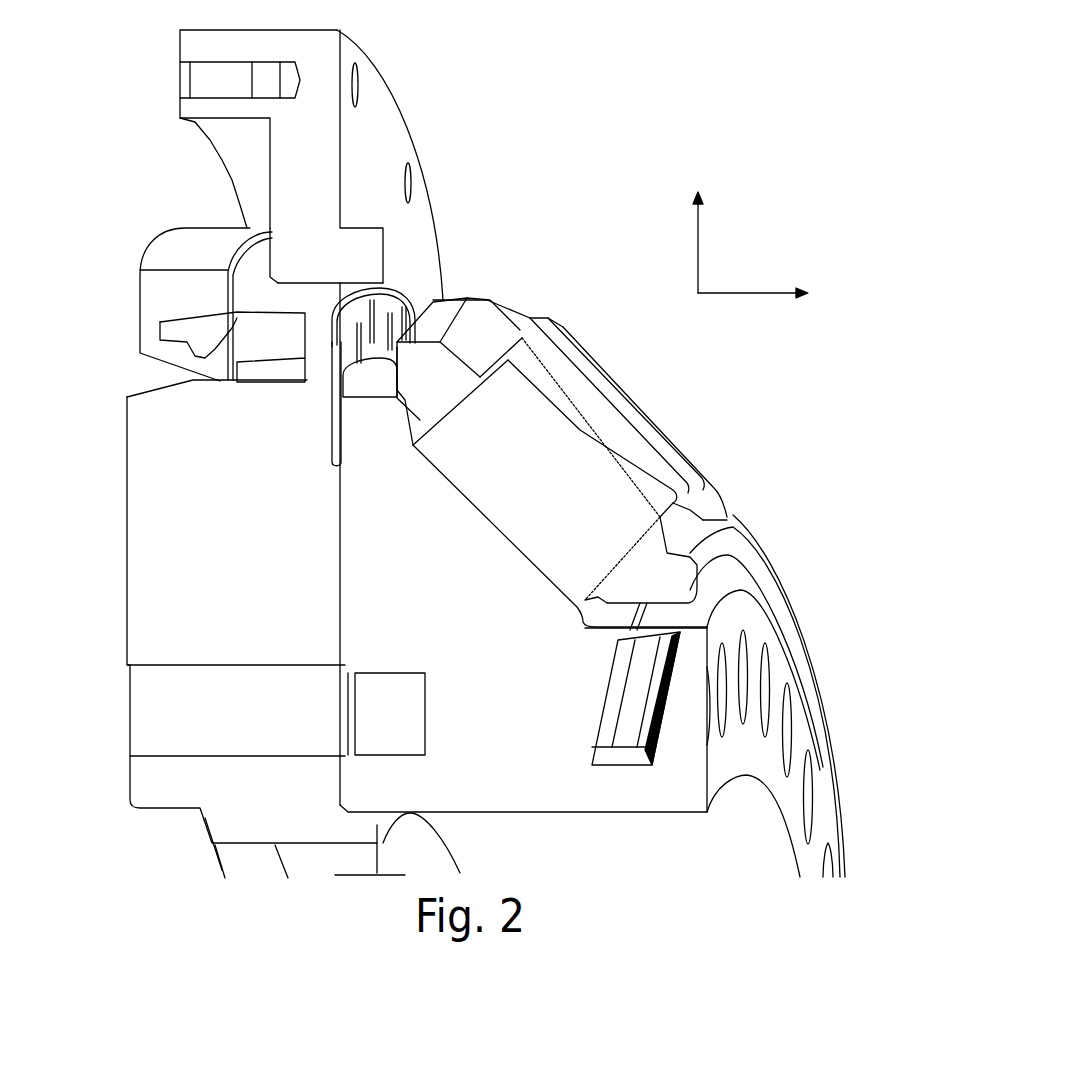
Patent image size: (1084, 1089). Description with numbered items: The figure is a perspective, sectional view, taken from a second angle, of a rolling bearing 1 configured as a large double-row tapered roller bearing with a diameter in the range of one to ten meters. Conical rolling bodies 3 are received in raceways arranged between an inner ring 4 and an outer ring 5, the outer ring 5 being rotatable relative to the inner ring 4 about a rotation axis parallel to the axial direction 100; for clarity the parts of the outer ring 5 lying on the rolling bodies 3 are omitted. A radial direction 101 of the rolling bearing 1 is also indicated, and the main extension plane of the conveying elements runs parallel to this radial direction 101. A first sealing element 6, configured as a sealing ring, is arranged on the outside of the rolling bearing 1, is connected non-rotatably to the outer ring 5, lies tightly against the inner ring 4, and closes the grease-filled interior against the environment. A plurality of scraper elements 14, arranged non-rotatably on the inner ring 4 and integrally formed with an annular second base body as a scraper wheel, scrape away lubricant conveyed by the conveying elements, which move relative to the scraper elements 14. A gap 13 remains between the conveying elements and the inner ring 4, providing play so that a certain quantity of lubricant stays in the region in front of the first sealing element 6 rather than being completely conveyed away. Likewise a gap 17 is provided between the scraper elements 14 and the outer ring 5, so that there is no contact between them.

The rolling bearing 1 is at (552, 98).
The conical rolling bodies 3 is at (577, 475).
The inner ring 4 is at (172, 587).
The outer ring 5 is at (230, 159).
The first sealing element 6 is at (163, 297).
The gap 13 is at (246, 374).
The scraper elements 14 is at (318, 353).
The gap 17 is at (303, 403).
The axial direction 100 is at (780, 293).
The radial direction 101 is at (697, 274).